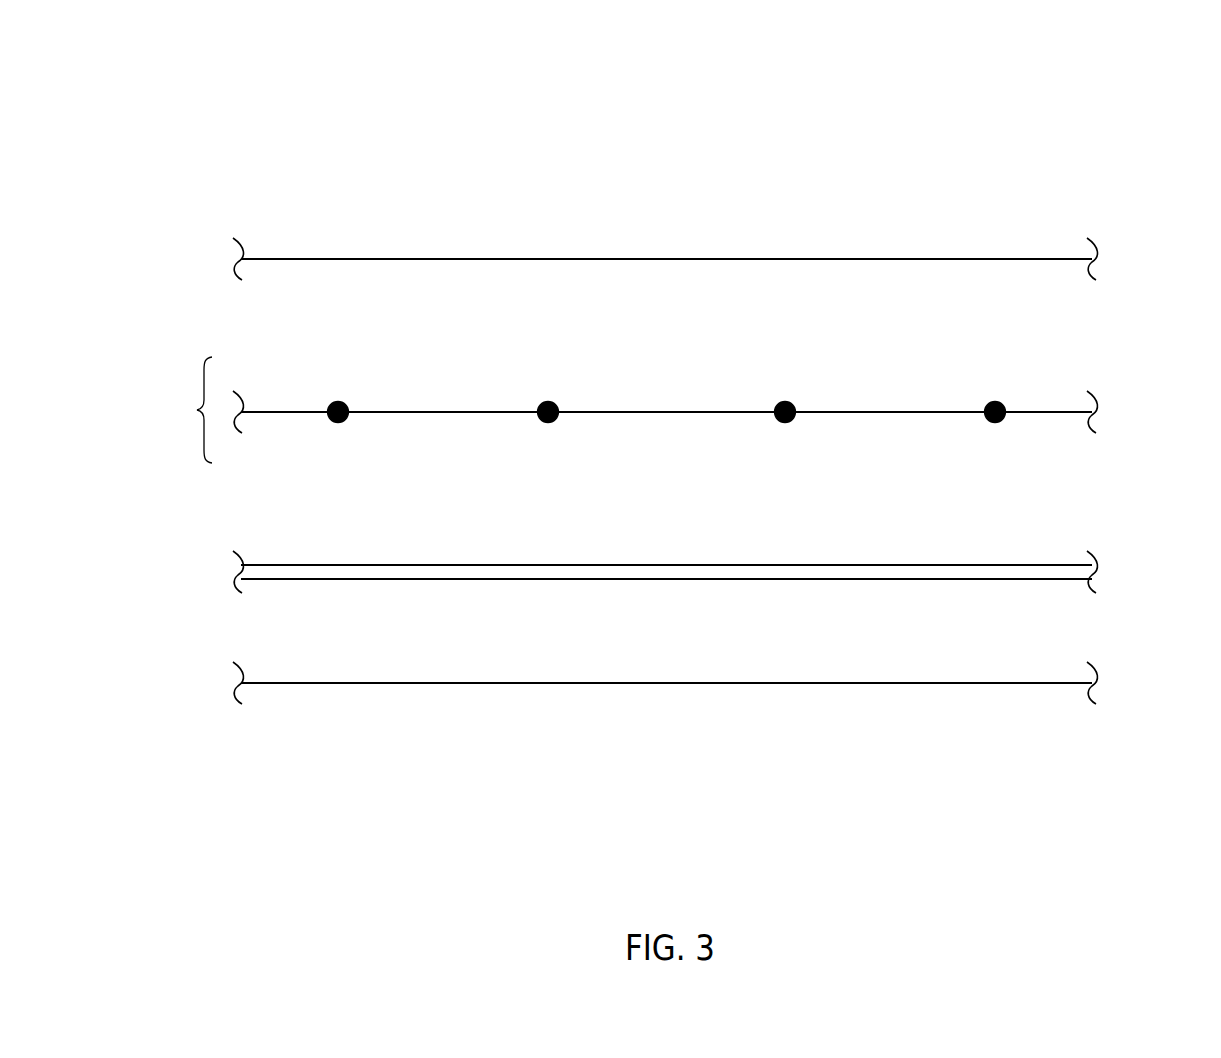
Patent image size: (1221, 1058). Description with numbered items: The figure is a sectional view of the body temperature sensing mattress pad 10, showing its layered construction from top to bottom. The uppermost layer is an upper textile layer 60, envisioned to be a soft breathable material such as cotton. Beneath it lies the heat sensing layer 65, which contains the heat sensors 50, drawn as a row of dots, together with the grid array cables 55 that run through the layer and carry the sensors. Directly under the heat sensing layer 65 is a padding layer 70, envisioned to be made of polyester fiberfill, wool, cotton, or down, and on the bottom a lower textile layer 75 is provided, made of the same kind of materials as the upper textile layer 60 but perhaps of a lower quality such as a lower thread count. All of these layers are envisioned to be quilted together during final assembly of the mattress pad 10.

The mattress pad 10 is at (320, 206).
The heat sensors 50 is at (330, 403).
The grid array cables 55 is at (441, 411).
The upper textile layer 60 is at (1052, 258).
The heat sensing layer 65 is at (196, 410).
The padding layer 70 is at (308, 572).
The lower textile layer 75 is at (572, 684).